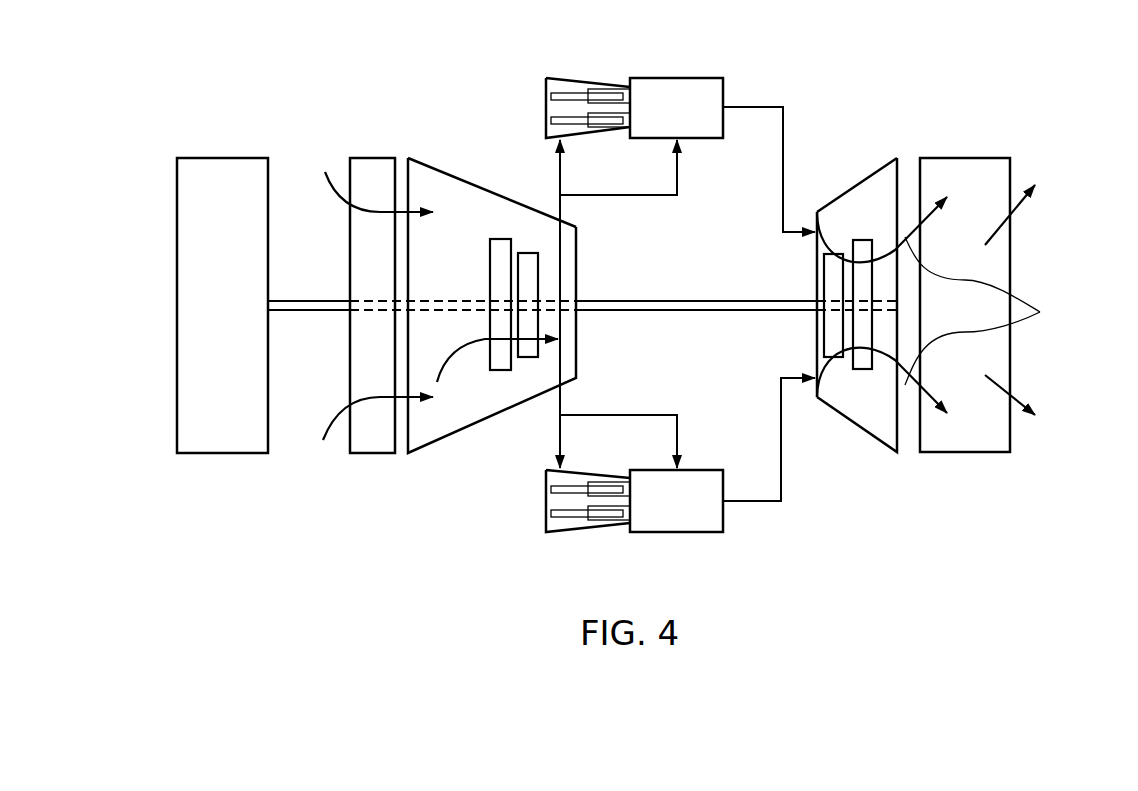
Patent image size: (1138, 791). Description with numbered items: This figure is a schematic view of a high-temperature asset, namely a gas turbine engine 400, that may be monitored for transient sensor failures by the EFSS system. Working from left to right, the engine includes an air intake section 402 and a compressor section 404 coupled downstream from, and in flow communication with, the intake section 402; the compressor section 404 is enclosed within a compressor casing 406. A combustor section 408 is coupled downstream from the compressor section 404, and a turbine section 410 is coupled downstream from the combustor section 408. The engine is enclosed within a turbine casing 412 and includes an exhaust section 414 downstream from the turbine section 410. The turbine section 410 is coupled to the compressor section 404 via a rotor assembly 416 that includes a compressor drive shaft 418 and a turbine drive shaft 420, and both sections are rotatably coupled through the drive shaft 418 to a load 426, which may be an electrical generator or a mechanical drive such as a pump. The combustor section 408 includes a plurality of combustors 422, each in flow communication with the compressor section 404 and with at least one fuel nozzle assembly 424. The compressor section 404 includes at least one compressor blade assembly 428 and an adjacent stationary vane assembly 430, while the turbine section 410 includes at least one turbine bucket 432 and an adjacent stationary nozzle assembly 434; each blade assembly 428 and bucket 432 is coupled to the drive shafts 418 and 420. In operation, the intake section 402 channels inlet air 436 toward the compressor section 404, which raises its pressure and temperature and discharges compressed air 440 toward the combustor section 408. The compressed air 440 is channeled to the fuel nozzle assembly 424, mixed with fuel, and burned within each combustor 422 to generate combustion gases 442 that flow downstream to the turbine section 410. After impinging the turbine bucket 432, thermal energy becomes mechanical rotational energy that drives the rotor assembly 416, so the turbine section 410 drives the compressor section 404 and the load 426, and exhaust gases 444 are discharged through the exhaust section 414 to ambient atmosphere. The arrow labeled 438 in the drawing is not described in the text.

The gas turbine engine 400 is at (150, 68).
The air intake section 402 is at (372, 157).
The compressor section 404 is at (418, 153).
The compressor casing 406 is at (477, 184).
The combustor section 408 is at (815, 90).
The turbine section 410 is at (876, 155).
The turbine casing 412 is at (822, 210).
The exhaust section 414 is at (966, 157).
The rotor assembly 416 is at (632, 290).
The compressor drive shaft 418 is at (438, 306).
The turbine drive shaft 420 is at (878, 308).
The combustor 422 is at (660, 120).
The fuel nozzle assembly 424 is at (576, 82).
The load 426 is at (222, 157).
The compressor blade assembly 428 is at (528, 358).
The stationary vane assembly 430 is at (498, 372).
The turbine bucket 432 is at (836, 358).
The stationary nozzle assembly 434 is at (862, 370).
The inlet air 436 is at (325, 195).
The compressed air flow 438 is at (457, 352).
The compressed air 440 is at (560, 173).
The combustion gases 442 is at (952, 305).
The exhaust gases 444 is at (1040, 212).